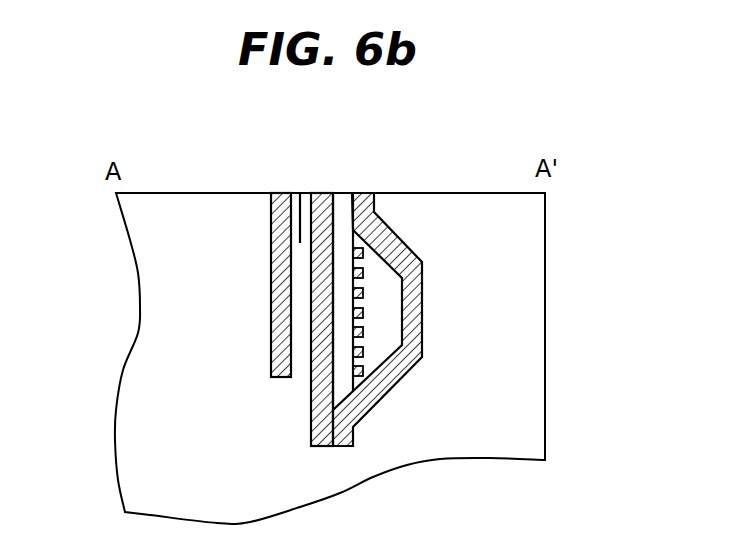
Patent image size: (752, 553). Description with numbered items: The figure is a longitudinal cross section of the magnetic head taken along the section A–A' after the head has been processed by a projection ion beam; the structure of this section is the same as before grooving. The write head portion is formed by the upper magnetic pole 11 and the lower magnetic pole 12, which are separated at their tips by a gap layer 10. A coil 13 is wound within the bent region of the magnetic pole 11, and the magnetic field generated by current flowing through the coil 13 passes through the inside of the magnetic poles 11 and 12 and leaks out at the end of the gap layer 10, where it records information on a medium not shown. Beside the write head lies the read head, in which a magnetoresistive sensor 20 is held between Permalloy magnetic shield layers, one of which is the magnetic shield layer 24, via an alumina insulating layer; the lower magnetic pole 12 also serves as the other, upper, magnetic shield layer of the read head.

The gap layer 10 is at (342, 193).
The upper magnetic pole 11 is at (368, 193).
The lower magnetic pole 12 is at (321, 193).
The coil 13 is at (362, 252).
The magnetoresistive sensor 20 is at (300, 193).
The magnetic shield layer 24 is at (273, 193).